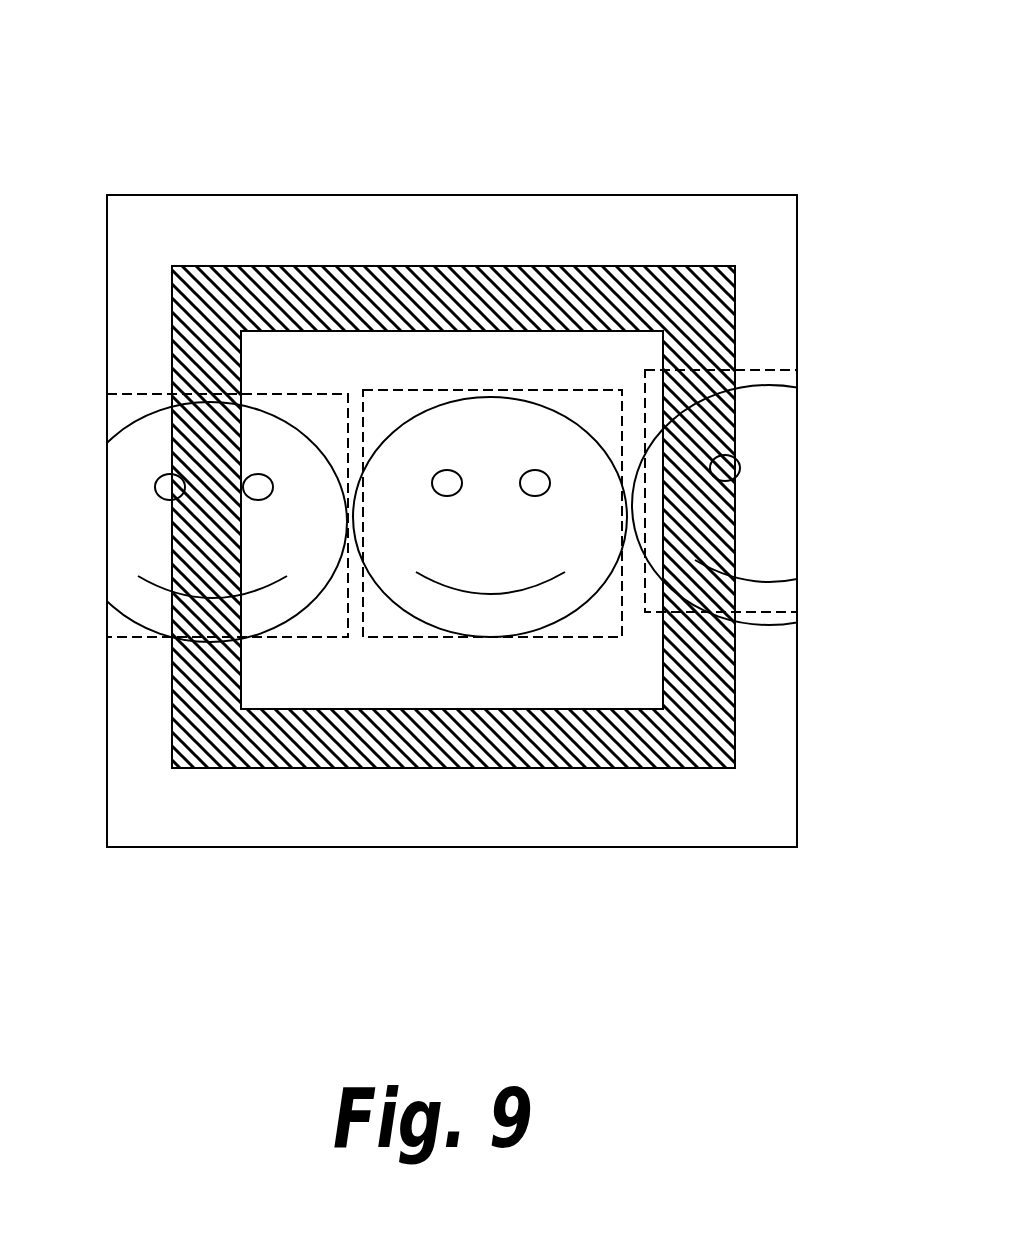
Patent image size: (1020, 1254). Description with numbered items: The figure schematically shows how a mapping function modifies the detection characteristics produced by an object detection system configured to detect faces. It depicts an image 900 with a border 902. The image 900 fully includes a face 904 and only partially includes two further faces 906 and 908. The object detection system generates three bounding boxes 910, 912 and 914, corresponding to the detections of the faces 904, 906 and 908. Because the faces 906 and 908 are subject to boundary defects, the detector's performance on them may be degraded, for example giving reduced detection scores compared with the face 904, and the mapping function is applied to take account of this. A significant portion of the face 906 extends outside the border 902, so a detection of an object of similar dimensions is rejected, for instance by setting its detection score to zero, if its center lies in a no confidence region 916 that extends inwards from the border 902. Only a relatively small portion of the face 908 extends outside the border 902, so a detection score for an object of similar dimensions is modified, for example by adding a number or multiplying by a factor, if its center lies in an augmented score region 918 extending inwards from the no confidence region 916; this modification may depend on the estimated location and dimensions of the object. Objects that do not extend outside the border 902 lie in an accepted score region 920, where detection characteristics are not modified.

The image 900 is at (376, 102).
The border 902 is at (597, 193).
The face 904 is at (400, 418).
The face 906 is at (735, 390).
The face 908 is at (160, 413).
The bounding box 910 is at (410, 638).
The bounding box 912 is at (642, 412).
The bounding box 914 is at (138, 638).
The no confidence region 916 is at (237, 218).
The augmented score region 918 is at (270, 753).
The accepted score region 920 is at (547, 676).